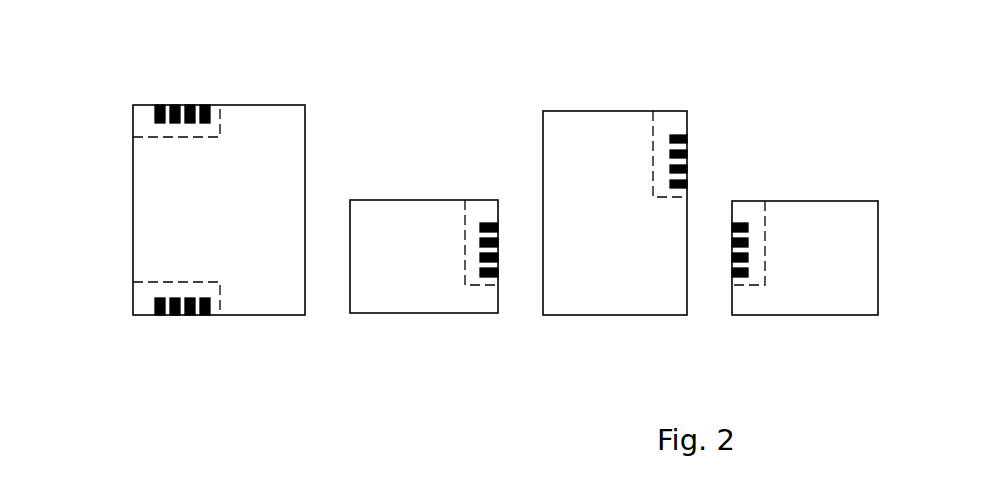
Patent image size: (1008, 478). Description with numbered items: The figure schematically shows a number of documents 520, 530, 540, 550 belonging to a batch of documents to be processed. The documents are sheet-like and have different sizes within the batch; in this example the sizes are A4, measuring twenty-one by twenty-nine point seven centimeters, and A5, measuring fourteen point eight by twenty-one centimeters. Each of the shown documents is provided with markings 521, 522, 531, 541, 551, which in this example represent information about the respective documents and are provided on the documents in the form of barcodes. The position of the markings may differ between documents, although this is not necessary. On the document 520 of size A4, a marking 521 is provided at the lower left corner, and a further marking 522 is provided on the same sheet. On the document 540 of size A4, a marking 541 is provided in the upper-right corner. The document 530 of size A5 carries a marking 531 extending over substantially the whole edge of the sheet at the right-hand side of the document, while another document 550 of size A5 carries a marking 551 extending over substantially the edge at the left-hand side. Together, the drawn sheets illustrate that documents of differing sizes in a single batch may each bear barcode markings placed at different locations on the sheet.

The document 520 is at (258, 300).
The marking 521 is at (146, 300).
The marking 522 is at (146, 128).
The document 530 is at (423, 300).
The marking 531 is at (483, 212).
The document 540 is at (618, 300).
The marking 541 is at (672, 123).
The document 550 is at (808, 300).
The marking 551 is at (750, 213).